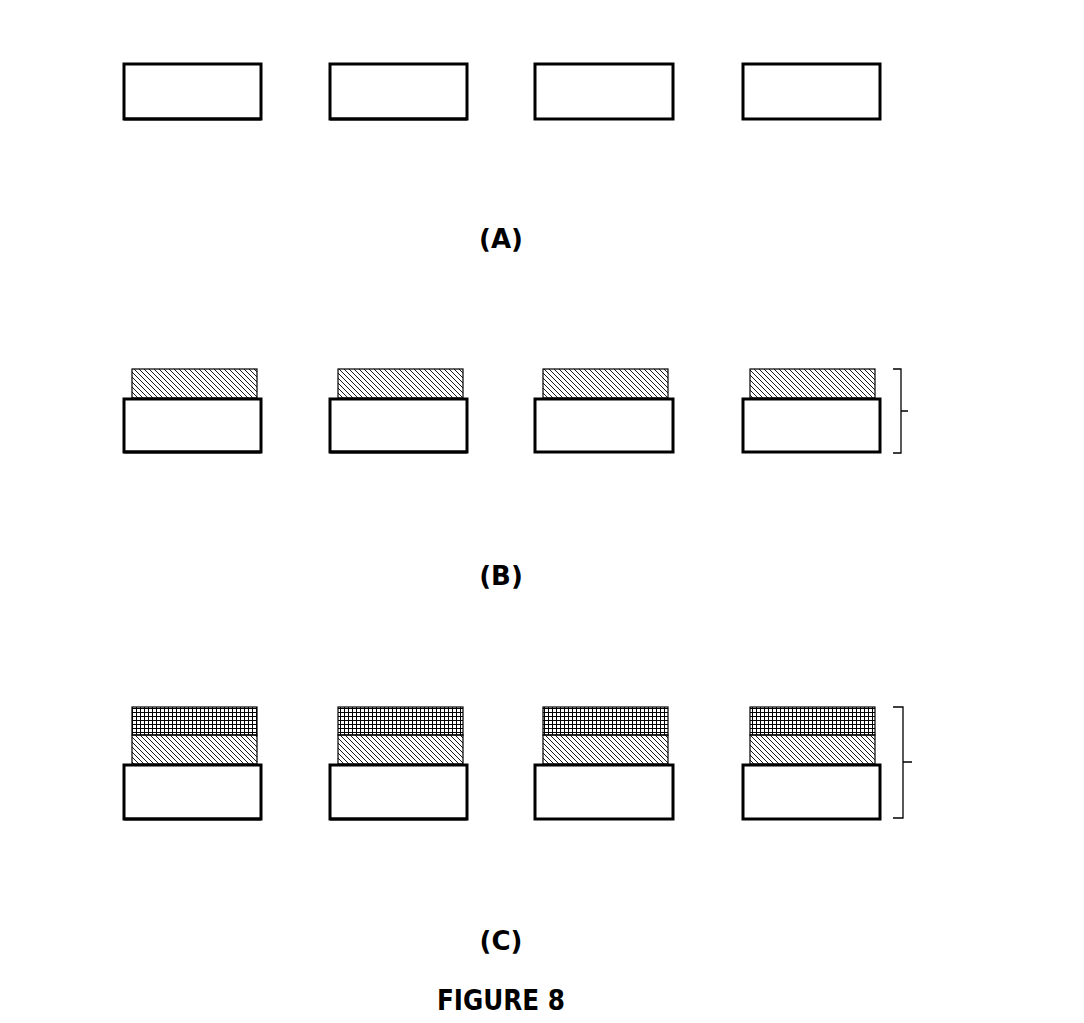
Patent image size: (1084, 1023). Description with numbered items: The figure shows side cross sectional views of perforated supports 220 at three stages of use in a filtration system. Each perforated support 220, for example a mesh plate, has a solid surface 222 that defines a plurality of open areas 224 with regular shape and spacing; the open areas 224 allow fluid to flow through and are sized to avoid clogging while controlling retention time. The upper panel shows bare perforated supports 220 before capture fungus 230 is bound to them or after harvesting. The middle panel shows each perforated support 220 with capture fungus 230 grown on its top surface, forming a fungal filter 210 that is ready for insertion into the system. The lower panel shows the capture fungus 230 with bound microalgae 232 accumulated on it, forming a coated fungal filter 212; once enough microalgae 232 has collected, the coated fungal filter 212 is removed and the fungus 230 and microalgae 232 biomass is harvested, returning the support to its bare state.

The fungal filter 210 is at (926, 411).
The coated fungal filter 212 is at (926, 762).
The perforated support 220 is at (111, 94).
The solid surface 222 is at (193, 120).
The open area 224 is at (278, 104).
The capture fungus 230 is at (132, 385).
The microalgae 232 is at (132, 718).